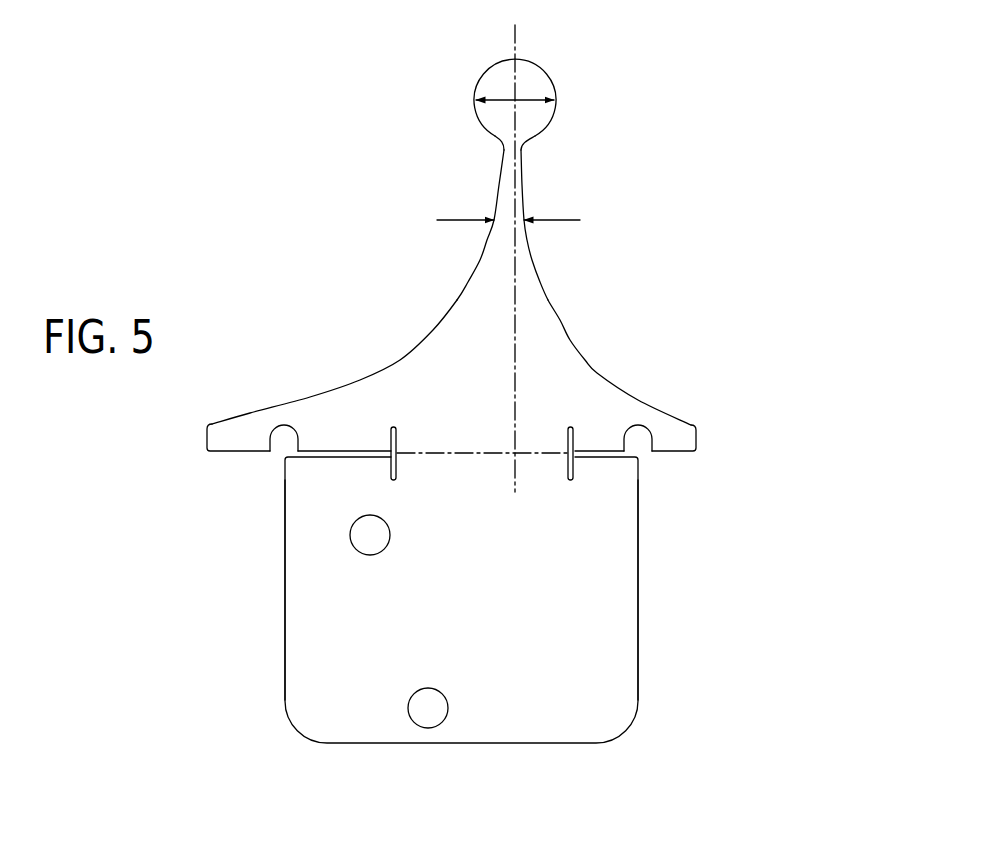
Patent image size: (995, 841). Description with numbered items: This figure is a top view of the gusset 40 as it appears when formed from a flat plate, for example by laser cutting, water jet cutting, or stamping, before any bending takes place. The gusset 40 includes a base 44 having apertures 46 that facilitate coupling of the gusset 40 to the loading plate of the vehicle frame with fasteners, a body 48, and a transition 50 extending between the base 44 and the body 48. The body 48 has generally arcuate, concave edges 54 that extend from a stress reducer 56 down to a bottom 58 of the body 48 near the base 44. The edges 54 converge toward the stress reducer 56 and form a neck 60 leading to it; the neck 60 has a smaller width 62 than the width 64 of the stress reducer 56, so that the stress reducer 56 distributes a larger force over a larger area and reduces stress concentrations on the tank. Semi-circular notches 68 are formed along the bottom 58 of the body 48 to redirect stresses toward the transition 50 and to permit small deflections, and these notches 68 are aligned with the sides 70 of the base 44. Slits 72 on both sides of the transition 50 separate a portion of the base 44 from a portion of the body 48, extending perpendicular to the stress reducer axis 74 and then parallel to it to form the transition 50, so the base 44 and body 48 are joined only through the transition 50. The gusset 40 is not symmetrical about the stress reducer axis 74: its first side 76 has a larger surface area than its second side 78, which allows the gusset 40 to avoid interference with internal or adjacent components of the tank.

The gusset 40 is at (317, 81).
The base 44 is at (585, 743).
The apertures 46 is at (367, 540).
The body 48 is at (475, 402).
The transition 50 is at (557, 546).
The edges 54 is at (457, 297).
The stress reducer 56 is at (552, 118).
The bottom 58 is at (325, 451).
The neck 60 is at (562, 249).
The width of neck 62 is at (558, 220).
The width of stress reducer 64 is at (507, 100).
The notches 68 is at (284, 425).
The sides of base 70 is at (285, 578).
The slits 72 is at (337, 457).
The stress reducer axis 74 is at (517, 46).
The first side 76 is at (357, 255).
The second side 78 is at (653, 272).